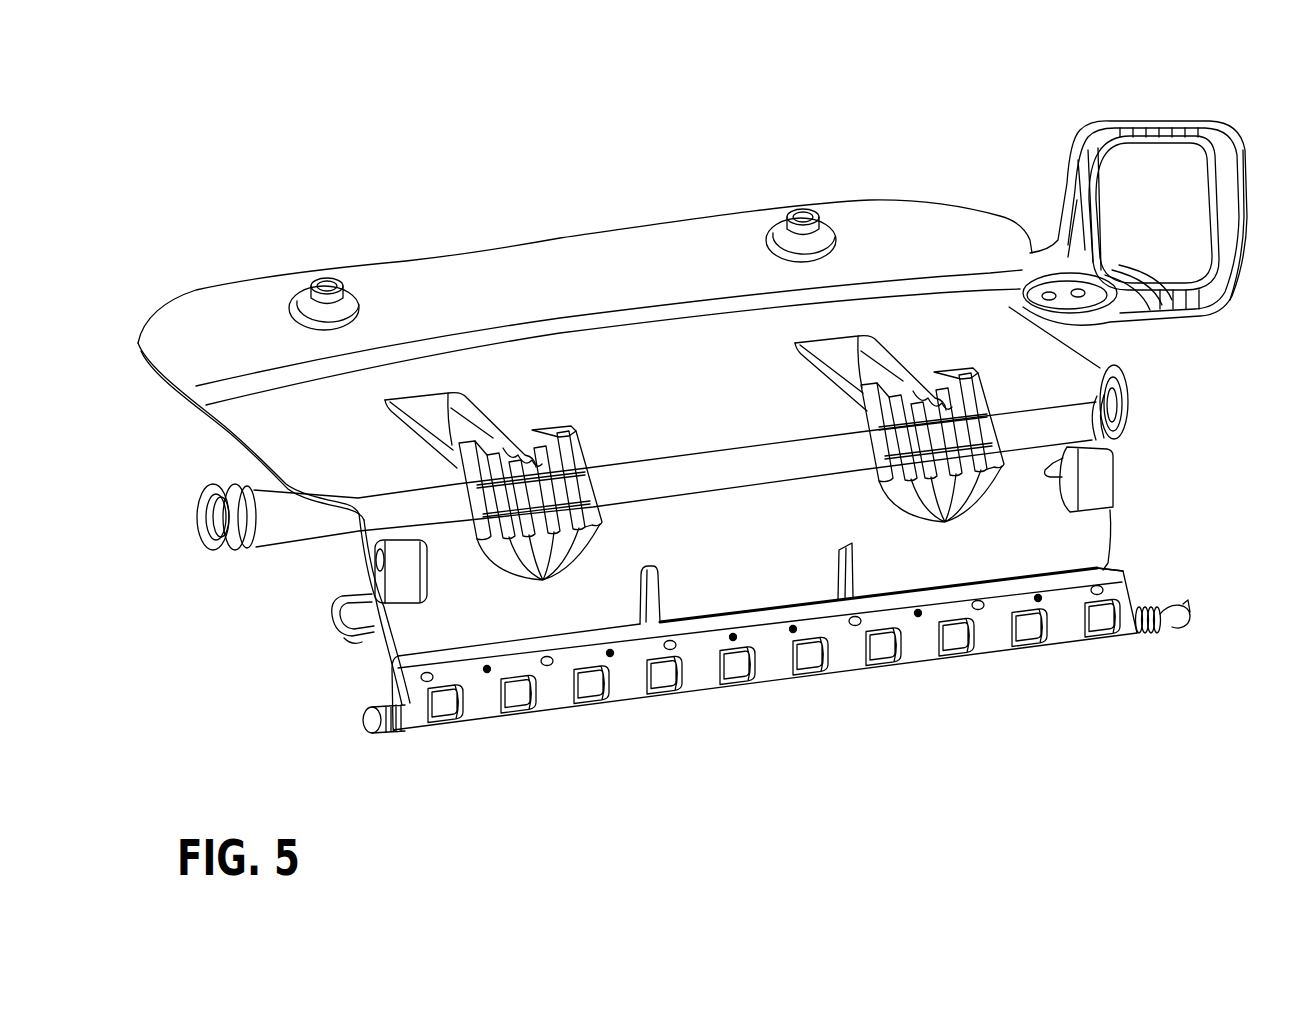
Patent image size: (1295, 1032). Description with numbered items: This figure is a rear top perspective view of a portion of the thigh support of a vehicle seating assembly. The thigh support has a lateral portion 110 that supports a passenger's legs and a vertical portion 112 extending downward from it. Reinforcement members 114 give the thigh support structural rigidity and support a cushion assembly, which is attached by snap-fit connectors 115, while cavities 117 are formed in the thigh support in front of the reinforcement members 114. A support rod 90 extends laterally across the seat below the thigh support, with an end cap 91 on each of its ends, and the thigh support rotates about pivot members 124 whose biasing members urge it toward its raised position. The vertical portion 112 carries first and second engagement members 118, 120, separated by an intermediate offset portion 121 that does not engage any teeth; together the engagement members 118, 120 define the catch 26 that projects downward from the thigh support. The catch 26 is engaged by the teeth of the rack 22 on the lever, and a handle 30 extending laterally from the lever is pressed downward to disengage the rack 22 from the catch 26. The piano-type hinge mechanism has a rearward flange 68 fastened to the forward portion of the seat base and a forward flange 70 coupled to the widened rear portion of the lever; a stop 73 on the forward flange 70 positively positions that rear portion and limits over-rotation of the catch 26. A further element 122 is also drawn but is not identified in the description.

The rack 22 is at (370, 640).
The catch 26 is at (338, 617).
The handle 30 is at (1237, 153).
The rearward flange 68 is at (1118, 593).
The forward flange 70 is at (393, 681).
The stop 73 is at (347, 640).
The support rod 90 is at (291, 528).
The end cap 91 is at (234, 551).
The lateral portion 110 is at (672, 410).
The vertical portion 112 is at (725, 560).
The reinforcement members 114 is at (731, 493).
The snap-fit connectors 115 is at (330, 280).
The cavities 117 is at (674, 388).
The first engagement member 118 is at (580, 607).
The second engagement member 120 is at (923, 565).
The intermediate offset portion 121 is at (762, 587).
The spring pin 122 is at (398, 741).
The pivot members 124 is at (400, 553).